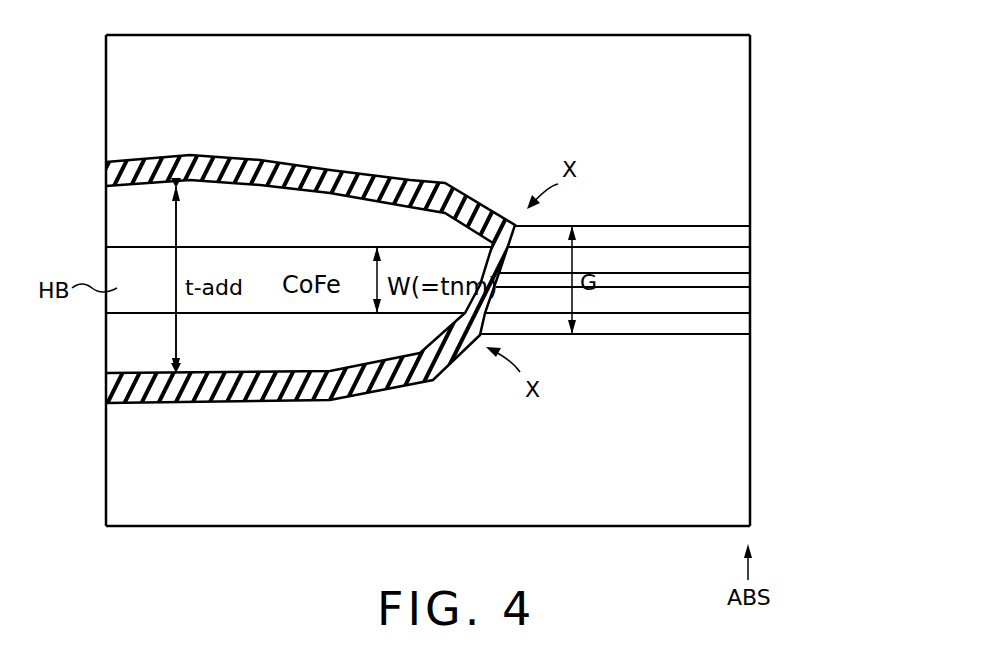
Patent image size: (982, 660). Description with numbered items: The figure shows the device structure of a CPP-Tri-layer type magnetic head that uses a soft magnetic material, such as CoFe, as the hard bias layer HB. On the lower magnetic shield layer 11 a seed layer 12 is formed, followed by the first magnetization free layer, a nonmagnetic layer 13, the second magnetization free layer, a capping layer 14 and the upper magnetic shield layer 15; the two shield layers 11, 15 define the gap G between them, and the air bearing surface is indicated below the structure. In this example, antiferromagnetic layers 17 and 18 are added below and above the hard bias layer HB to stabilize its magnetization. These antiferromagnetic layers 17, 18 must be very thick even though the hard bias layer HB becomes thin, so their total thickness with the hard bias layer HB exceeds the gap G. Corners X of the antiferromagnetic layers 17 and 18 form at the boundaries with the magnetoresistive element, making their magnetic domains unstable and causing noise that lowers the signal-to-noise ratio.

The magnetic shield layer 11 is at (736, 435).
The seed layer 12 is at (737, 327).
The nonmagnetic layer 13 is at (737, 280).
The capping layer 14 is at (737, 237).
The magnetic shield layer 15 is at (737, 158).
The antiferromagnetic layer 17 is at (117, 348).
The antiferromagnetic layer 18 is at (117, 218).